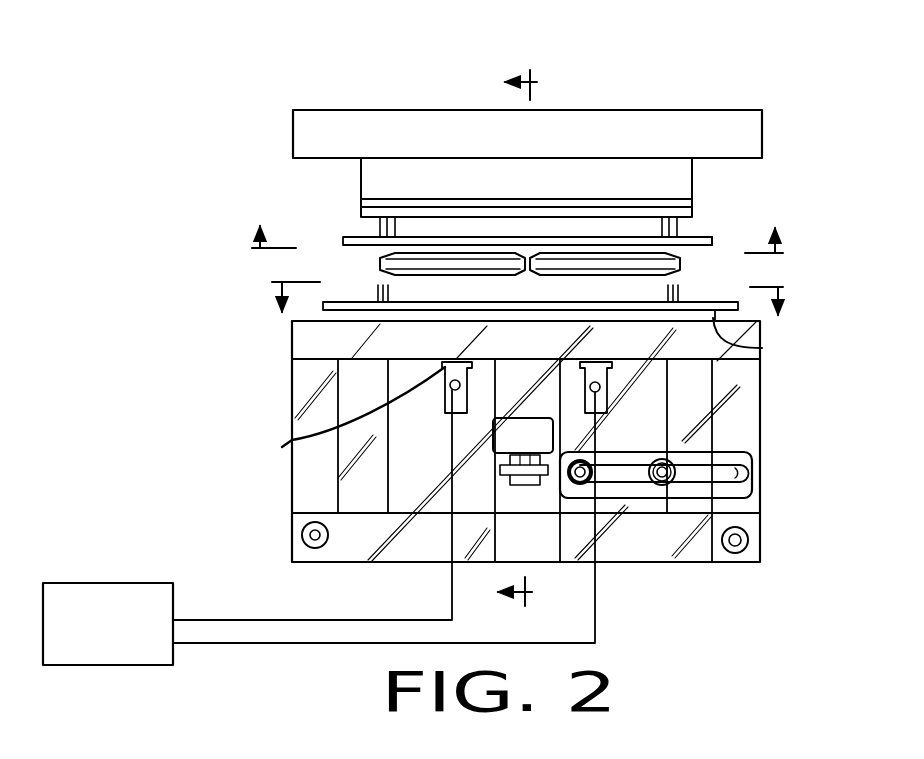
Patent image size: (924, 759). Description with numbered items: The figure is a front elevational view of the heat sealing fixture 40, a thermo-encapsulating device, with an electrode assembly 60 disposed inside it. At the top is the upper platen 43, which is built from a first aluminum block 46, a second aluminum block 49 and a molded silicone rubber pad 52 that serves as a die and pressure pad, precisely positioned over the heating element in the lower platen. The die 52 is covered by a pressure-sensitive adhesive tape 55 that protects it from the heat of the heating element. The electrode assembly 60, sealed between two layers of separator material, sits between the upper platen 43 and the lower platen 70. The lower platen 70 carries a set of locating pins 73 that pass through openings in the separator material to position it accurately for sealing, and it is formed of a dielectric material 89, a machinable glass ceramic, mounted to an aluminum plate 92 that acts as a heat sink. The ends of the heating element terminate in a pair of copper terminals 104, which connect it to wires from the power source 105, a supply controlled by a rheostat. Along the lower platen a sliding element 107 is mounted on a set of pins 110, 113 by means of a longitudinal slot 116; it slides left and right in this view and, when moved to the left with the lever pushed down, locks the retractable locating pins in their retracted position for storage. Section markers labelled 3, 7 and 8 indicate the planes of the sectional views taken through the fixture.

The heat sealing fixture 40 is at (150, 88).
The upper platen 43 is at (287, 109).
The first aluminum block 46 is at (740, 127).
The second aluminum block 49 is at (557, 180).
The molded silicone rubber pad 52 is at (680, 232).
The pressure-sensitive adhesive tape 55 is at (345, 235).
The electrode assembly 60 is at (432, 252).
The lower platen 70 is at (248, 283).
The locating pins 73 is at (378, 287).
The dielectric material 89 is at (762, 350).
The aluminum plate 92 is at (310, 338).
The copper terminals 104 is at (418, 418).
The power source 105 is at (135, 637).
The sliding element 107 is at (745, 497).
The pin 110 is at (584, 482).
The pin 113 is at (662, 472).
The longitudinal slot 116 is at (727, 462).
The section line 3- 3 is at (529, 340).
The section line 7- 7 is at (534, 305).
The section line 8- 8 is at (522, 241).